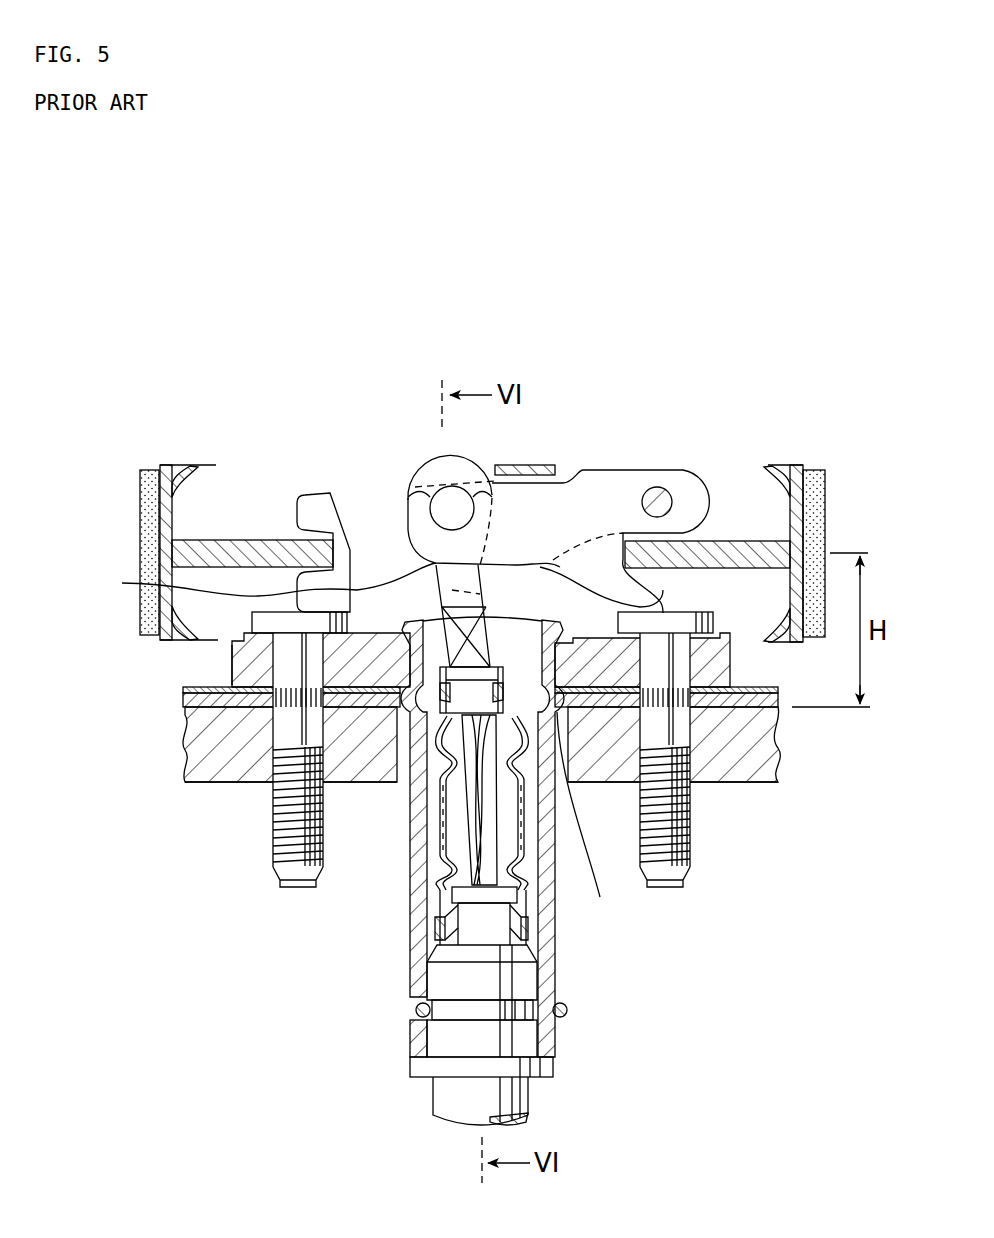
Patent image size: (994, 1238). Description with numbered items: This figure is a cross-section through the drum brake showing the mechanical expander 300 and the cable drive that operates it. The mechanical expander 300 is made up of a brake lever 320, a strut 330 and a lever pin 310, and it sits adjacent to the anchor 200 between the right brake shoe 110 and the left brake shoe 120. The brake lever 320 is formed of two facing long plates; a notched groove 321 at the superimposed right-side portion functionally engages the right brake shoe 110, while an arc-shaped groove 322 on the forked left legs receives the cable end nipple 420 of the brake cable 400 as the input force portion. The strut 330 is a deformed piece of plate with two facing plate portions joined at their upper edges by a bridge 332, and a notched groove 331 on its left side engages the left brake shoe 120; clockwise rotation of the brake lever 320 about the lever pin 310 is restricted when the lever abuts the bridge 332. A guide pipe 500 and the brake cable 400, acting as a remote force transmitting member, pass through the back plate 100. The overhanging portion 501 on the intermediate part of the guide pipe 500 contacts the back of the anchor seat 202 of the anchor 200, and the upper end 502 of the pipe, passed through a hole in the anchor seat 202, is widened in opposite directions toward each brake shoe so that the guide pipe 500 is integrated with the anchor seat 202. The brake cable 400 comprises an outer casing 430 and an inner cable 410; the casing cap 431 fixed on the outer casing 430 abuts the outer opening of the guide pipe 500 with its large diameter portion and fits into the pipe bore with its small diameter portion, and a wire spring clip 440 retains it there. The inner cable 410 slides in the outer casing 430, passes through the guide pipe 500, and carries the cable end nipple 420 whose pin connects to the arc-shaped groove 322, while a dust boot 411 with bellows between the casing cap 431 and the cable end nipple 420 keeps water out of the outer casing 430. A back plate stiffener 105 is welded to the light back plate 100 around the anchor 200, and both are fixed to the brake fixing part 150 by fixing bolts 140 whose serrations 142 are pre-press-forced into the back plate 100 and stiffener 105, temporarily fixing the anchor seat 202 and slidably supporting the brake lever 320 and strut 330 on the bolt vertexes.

The back plate 100 is at (182, 689).
The back plate stiffener 105 is at (183, 700).
The right brake shoe 110 is at (793, 462).
The left brake shoe 120 is at (168, 460).
The fixing bolt 140 is at (270, 834).
The serration 142 is at (186, 740).
The brake fixing part 150 is at (768, 787).
The anchor 200 is at (458, 657).
The anchor seat 202 is at (240, 660).
The mechanical expander 300 is at (545, 499).
The lever pin 310 is at (660, 488).
The brake lever 320 is at (590, 562).
The notched groove 321 is at (706, 540).
The arc-shaped groove 322 is at (428, 483).
The strut 330 is at (316, 502).
The notched groove 331 is at (308, 540).
The bridge 332 is at (552, 467).
The brake cable 400 is at (486, 853).
The inner cable 410 is at (440, 938).
The dust boot 411 is at (438, 892).
The cable end nipple 420 is at (450, 464).
The outer casing 430 is at (450, 1105).
The casing cap 431 is at (438, 1040).
The wire spring clip 440 is at (568, 1012).
The guide pipe 500 is at (533, 837).
The overhanging portion 501 is at (593, 816).
The upper end 502 is at (316, 580).